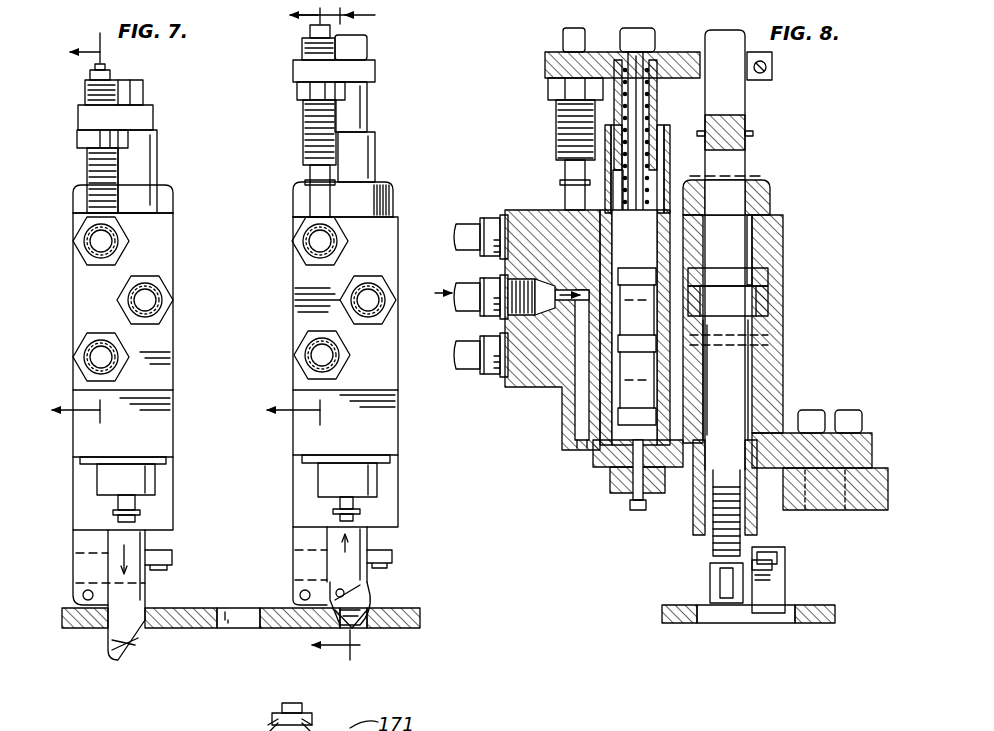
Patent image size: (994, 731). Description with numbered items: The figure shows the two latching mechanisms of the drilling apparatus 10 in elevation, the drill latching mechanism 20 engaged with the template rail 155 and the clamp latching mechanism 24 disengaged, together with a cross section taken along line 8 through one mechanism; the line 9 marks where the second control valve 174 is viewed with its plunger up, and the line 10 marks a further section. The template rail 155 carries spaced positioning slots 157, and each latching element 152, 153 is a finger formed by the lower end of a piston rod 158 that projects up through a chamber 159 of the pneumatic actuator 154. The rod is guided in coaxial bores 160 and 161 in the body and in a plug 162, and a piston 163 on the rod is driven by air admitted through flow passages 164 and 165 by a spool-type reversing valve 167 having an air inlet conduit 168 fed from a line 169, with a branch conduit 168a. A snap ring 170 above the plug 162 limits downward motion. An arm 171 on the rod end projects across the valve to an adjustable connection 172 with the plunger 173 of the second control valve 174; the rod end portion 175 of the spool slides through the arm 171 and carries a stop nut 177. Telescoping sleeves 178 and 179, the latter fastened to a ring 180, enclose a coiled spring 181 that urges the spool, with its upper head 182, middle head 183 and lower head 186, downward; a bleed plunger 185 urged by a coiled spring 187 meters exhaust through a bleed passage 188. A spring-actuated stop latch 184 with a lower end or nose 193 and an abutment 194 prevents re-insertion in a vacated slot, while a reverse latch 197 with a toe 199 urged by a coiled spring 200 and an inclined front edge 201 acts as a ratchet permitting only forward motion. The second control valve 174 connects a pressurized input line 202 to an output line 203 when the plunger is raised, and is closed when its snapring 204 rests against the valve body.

In FIG. 7, the section line 8— 8 is at (341, 333).
In FIG. 7, the section line 9— 9 is at (306, 226).
In FIG. 7, the drilling apparatus 10 is at (63, 238).
In FIG. 7, the latching mechanism 20 is at (56, 176).
In FIG. 7, the second latching mechanism 24 is at (283, 316).
In FIG. 8, the second latching mechanism 24 is at (800, 242).
In FIG. 7, the latching element 152 is at (150, 598).
In FIG. 7, the latching element 153 is at (392, 582).
In FIG. 8, the latching element 153 is at (802, 582).
In FIG. 7, the actuator 154 is at (160, 492).
In FIG. 8, the actuator 154 is at (786, 334).
In FIG. 7, the template rail 155 is at (402, 626).
In FIG. 8, the template rail 155 is at (680, 624).
In FIG. 7, the slots 157 is at (228, 630).
In FIG. 8, the slots 157 is at (728, 624).
In FIG. 7, the piston rod 158 is at (145, 542).
In FIG. 8, the piston rod 158 is at (750, 100).
In FIG. 8, the chamber 159 is at (760, 392).
In FIG. 8, the bore 160 is at (700, 510).
In FIG. 8, the bore 161 is at (756, 178).
In FIG. 7, the plug 162 is at (385, 198).
In FIG. 8, the plug 162 is at (770, 205).
In FIG. 8, the piston 163 is at (770, 306).
In FIG. 8, the flow passage 164 is at (700, 265).
In FIG. 8, the flow passage 165 is at (692, 338).
In FIG. 8, the reversing valve 167 is at (595, 252).
In FIG. 8, the air inlet conduit 168 is at (592, 286).
In FIG. 8, the branch conduit 168a is at (586, 412).
In FIG. 7, the line 169 is at (158, 296).
In FIG. 8, the line 169 is at (462, 312).
In FIG. 8, the snap ring 170 is at (756, 134).
In FIG. 7, the arm 171 is at (150, 118).
In FIG. 8, the arm 171 is at (604, 52).
In FIG. 7, the adjustable connection 172 is at (87, 160).
In FIG. 8, the adjustable connection 172 is at (557, 124).
In FIG. 7, the plunger 173 is at (312, 205).
In FIG. 8, the second control valve 174 is at (506, 214).
In FIG. 8, the rod end portion 175 is at (662, 150).
In FIG. 7, the stop nut 177 is at (140, 94).
In FIG. 8, the stop nut 177 is at (652, 34).
In FIG. 7, the upper sleeve 178 is at (150, 168).
In FIG. 8, the upper sleeve 178 is at (650, 118).
In FIG. 7, the lower sleeve 179 is at (375, 163).
In FIG. 8, the lower sleeve 179 is at (578, 178).
In FIG. 8, the ring 180 is at (715, 176).
In FIG. 8, the coiled spring 181 is at (656, 102).
In FIG. 8, the upper head 182 is at (637, 275).
In FIG. 8, the spool head 183 is at (637, 342).
In FIG. 8, the stop latch 184 is at (708, 586).
In FIG. 8, the bleed plunger 185 is at (612, 487).
In FIG. 8, the lower head 186 is at (637, 415).
In FIG. 8, the coiled spring 187 is at (610, 470).
In FIG. 8, the bleed passage 188 is at (648, 505).
In FIG. 7, the lower end 193 is at (112, 655).
In FIG. 7, the abutment 194 is at (135, 650).
In FIG. 7, the reverse latch 197 is at (372, 600).
In FIG. 8, the reverse latch 197 is at (782, 624).
In FIG. 7, the toe 199 is at (355, 624).
In FIG. 8, the coiled spring 200 is at (770, 572).
In FIG. 7, the inclined front edge 201 is at (305, 628).
In FIG. 7, the input line 202 is at (86, 368).
In FIG. 8, the input line 202 is at (470, 358).
In FIG. 7, the output line 203 is at (90, 252).
In FIG. 8, the output line 203 is at (458, 240).
In FIG. 7, the snapring 204 is at (92, 214).
In FIG. 8, the snapring 204 is at (586, 184).